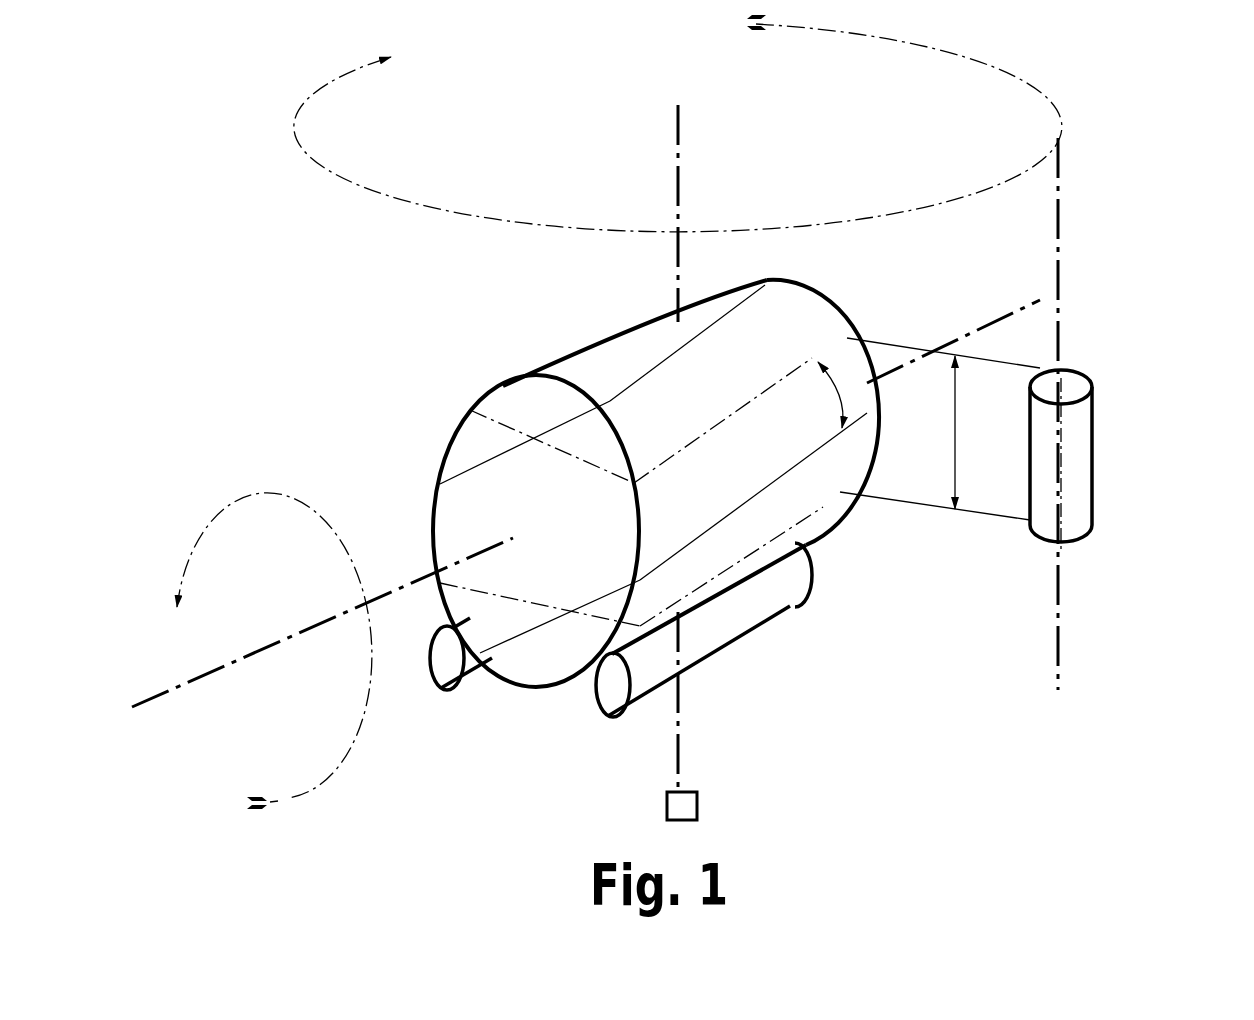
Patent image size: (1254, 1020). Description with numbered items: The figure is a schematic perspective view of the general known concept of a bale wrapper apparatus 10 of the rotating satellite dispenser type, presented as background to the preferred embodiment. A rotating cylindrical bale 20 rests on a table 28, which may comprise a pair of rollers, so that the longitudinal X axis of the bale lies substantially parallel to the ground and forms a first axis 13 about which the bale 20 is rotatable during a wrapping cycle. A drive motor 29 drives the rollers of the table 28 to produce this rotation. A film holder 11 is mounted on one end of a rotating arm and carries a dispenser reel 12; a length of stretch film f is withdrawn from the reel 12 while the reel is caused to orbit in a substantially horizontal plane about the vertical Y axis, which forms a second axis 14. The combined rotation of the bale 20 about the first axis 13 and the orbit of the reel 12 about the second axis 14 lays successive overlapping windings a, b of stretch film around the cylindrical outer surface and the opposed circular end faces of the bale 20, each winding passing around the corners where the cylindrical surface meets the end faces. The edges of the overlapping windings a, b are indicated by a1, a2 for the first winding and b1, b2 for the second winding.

The bale wrapper apparatus 10 is at (1068, 240).
The film holder 11 is at (1060, 443).
The dispenser reel 12 is at (1094, 469).
The first axis 13 is at (403, 580).
The second axis 14 is at (683, 213).
The cylindrical bale 20 is at (714, 604).
The table 28 is at (698, 675).
The drive motor 29 is at (698, 797).
The winding of stretch film a is at (522, 512).
The edge of winding a a1 is at (498, 457).
The edge of winding a a2 is at (795, 472).
The winding of stretch film b is at (720, 469).
The edge of winding b b1 is at (517, 432).
The edge of winding b b2 is at (773, 547).
The stretch film f is at (987, 402).